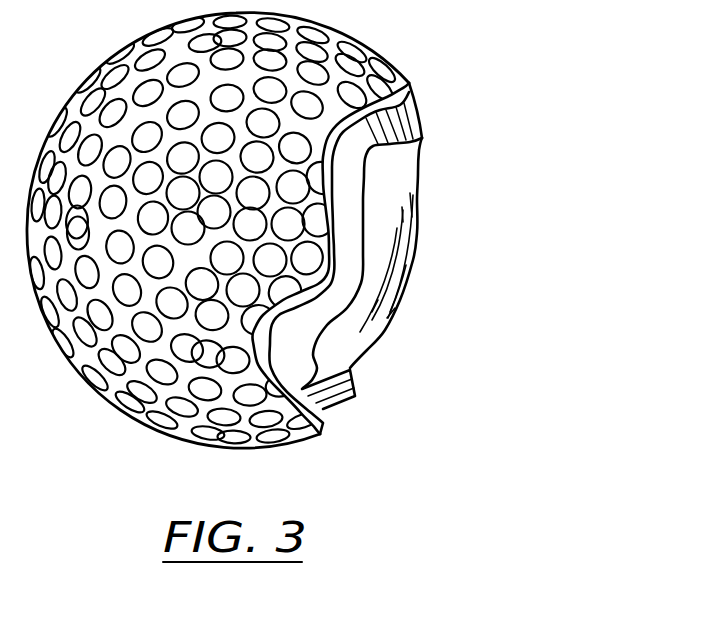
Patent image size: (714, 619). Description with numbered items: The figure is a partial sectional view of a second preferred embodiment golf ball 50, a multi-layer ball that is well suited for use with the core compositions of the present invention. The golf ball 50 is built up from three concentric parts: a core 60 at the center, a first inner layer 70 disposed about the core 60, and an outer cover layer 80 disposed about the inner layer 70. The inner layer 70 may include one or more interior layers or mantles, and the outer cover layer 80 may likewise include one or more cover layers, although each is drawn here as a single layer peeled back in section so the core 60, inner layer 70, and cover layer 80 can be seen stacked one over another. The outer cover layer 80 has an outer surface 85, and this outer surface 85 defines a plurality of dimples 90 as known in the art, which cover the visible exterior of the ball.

The golf ball 50 is at (318, 248).
The core 60 is at (404, 268).
The first inner layer 70 is at (341, 378).
The outer cover layer 80 is at (328, 414).
The outer surface 85 is at (185, 432).
The dimples 90 is at (147, 393).